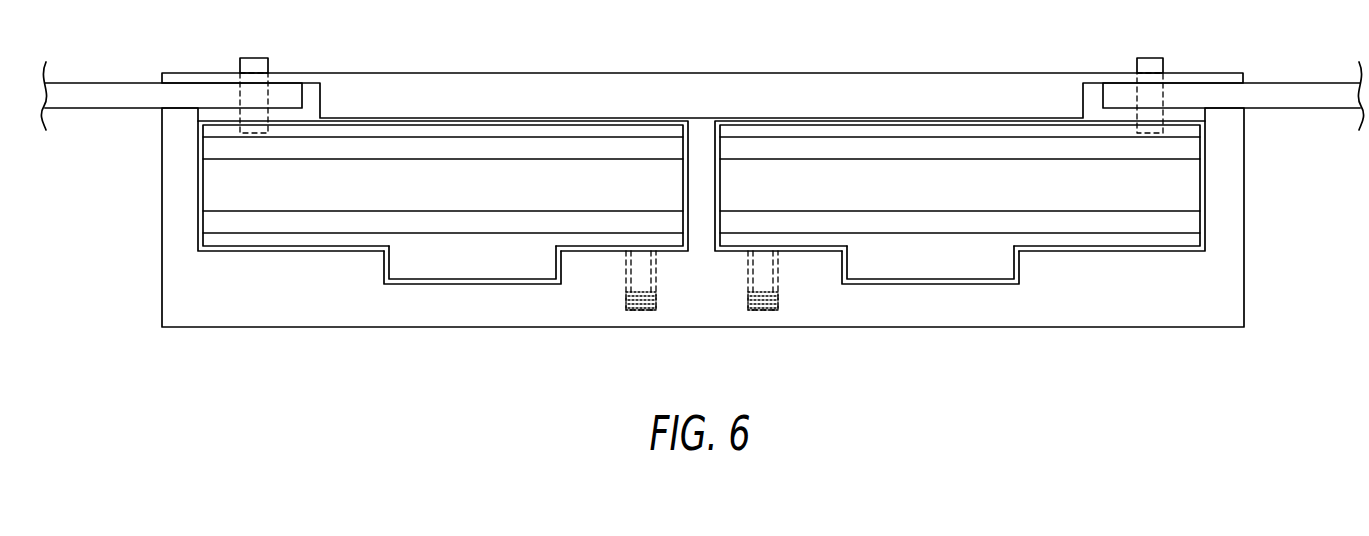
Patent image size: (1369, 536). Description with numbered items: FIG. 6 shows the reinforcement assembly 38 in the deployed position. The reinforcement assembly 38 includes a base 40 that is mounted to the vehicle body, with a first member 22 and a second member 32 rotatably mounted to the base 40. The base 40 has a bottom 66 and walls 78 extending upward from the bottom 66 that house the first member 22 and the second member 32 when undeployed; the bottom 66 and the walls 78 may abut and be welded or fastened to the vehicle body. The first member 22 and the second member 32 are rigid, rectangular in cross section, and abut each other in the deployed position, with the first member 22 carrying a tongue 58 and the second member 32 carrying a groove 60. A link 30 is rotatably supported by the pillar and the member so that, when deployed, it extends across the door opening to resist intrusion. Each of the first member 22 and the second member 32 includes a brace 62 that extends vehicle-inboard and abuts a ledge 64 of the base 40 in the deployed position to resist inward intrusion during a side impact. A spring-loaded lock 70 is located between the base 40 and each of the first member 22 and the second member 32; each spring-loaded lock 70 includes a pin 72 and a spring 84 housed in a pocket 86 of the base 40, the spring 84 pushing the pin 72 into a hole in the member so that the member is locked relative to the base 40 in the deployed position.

The first member 22 is at (893, 168).
The link 30 is at (98, 82).
The second member 32 is at (508, 168).
The reinforcement assembly 38 is at (198, 358).
The base 40 is at (162, 285).
The tongue 58 is at (1165, 192).
The groove 60 is at (240, 195).
The brace 62 is at (433, 260).
The ledge 64 is at (592, 270).
The bottom 66 is at (200, 250).
The spring-loaded lock 70 is at (633, 313).
The pin 72 is at (626, 280).
The walls 78 is at (1038, 100).
The spring 84 is at (660, 300).
The pocket 86 is at (659, 268).